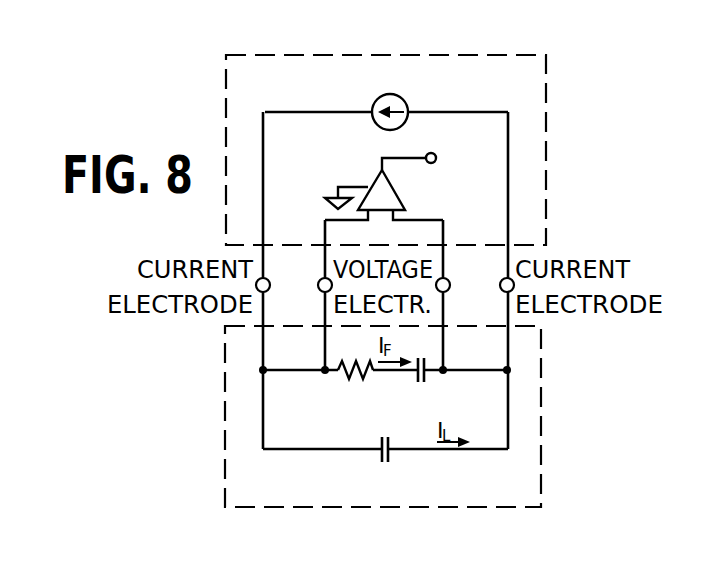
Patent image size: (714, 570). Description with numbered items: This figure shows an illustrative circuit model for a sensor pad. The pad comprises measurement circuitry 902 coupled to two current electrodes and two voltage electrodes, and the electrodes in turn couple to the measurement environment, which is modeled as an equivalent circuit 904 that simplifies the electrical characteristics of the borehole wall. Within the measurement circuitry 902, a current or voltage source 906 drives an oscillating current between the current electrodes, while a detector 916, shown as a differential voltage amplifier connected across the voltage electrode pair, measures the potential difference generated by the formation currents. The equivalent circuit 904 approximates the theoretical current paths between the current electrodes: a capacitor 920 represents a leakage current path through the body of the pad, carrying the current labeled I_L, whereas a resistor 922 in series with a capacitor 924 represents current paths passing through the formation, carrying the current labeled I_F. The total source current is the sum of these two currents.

The measurement circuitry 902 is at (288, 55).
The equivalent circuit 904 is at (288, 508).
The current or voltage source 906 is at (383, 128).
The detector 916 is at (402, 203).
The capacitor 920 is at (380, 455).
The resistor 922 is at (348, 377).
The capacitor 924 is at (417, 374).